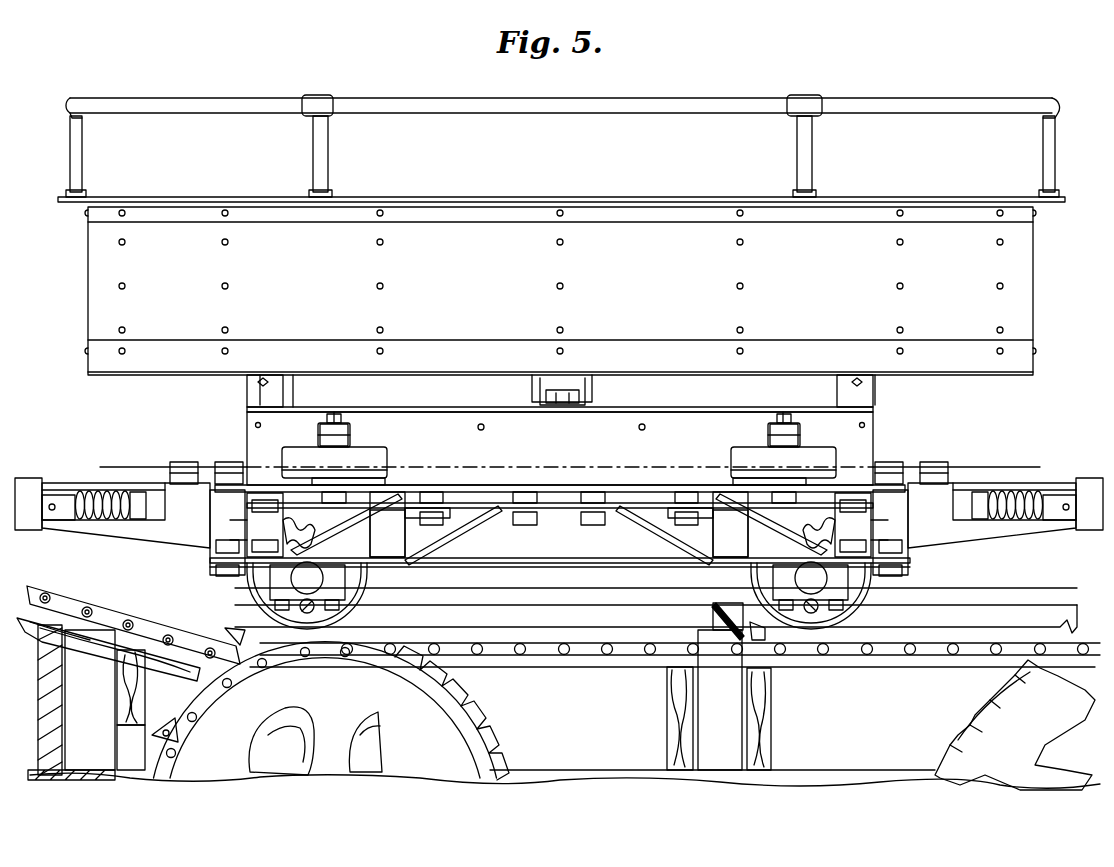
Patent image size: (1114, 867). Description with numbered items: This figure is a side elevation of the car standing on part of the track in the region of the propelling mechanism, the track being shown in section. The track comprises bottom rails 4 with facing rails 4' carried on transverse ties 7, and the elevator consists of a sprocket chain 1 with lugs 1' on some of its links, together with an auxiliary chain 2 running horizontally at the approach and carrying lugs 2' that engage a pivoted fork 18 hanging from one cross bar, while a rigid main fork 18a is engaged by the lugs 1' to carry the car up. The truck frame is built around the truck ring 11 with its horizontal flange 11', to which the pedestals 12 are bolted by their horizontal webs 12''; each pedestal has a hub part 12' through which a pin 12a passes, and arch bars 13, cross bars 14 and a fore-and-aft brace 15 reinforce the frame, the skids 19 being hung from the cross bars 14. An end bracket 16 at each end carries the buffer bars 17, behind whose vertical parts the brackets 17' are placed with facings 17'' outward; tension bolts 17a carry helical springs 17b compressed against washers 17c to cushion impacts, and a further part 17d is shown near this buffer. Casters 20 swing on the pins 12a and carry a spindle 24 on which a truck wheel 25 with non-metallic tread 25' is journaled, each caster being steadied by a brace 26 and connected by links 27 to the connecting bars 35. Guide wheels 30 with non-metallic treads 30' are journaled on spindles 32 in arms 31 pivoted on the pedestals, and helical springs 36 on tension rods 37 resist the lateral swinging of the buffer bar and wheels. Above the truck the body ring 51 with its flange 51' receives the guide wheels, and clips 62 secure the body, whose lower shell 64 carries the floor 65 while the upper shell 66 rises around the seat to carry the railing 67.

The sprocket chain 1 is at (128, 633).
The lugs 1' is at (230, 620).
The auxiliary chain 2 is at (680, 677).
The lugs 2' is at (481, 682).
The bottom rails 4 is at (565, 727).
The facing rails 4' is at (656, 658).
The transverse ties 7 is at (125, 682).
The truck ring 11 is at (616, 528).
The horizontal flange 11' is at (567, 535).
The pedestals 12 is at (559, 561).
The hub part 12' is at (559, 534).
The horizontal web 12'' is at (589, 497).
The pins 12a is at (372, 492).
The arch bar 13 is at (592, 498).
The cross bars 14 is at (405, 572).
The fore-and-aft brace 15 is at (552, 563).
The end bracket 16 is at (268, 518).
The buffer bars 17 is at (559, 526).
The brackets 17' is at (573, 492).
The facings 17'' is at (548, 514).
The tension bolts 17a is at (112, 518).
The helical springs 17b is at (108, 498).
The washers 17c is at (130, 515).
The housing flange 17d is at (210, 505).
The pivoted fork 18 is at (705, 632).
The main fork 18a is at (730, 622).
The skids 19 is at (568, 590).
The casters 20 is at (333, 592).
The spindle 24 is at (559, 578).
The truck wheel 25 is at (555, 639).
The non-metallic treads 25' is at (600, 666).
The brace 26 is at (405, 500).
The links 27 is at (559, 519).
The guide wheels 30 is at (571, 422).
The non-metallic treads 30' is at (611, 369).
The arms 31 is at (420, 486).
The spindles 32 is at (343, 420).
The connecting bars 35 is at (205, 488).
The helical springs 36 is at (272, 530).
The tension rods 37 is at (895, 555).
The body ring 51 is at (565, 430).
The flange 51' is at (599, 390).
The clips 62 is at (258, 380).
The lower shell 64 is at (293, 380).
The floor 65 is at (545, 568).
The upper shell 66 is at (560, 291).
The railing 67 is at (728, 113).